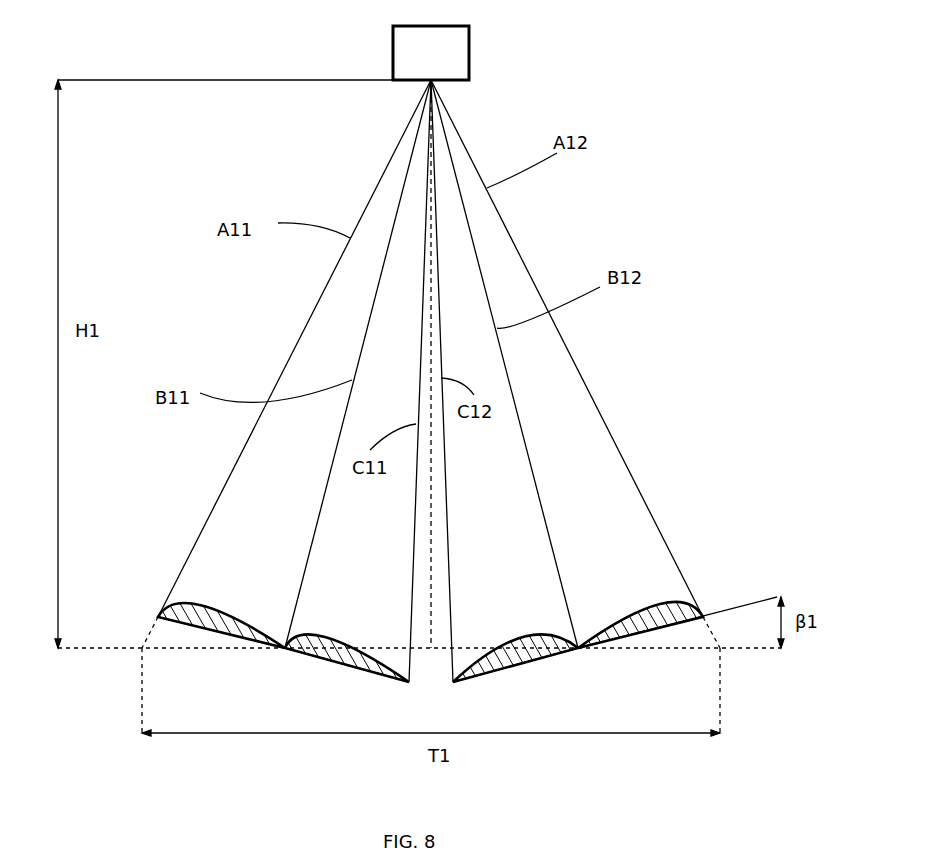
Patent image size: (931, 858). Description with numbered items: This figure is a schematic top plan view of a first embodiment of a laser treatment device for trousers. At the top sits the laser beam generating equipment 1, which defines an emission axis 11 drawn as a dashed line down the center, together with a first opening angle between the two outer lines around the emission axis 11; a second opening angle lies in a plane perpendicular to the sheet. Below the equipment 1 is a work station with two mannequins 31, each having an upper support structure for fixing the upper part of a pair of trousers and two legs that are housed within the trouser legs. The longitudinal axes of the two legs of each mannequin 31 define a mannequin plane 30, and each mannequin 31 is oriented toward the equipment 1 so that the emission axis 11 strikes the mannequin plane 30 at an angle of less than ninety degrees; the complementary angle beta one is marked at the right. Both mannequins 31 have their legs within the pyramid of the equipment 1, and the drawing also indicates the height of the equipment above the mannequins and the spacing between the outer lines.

The laser beam generating equipment 1 is at (442, 60).
The emission axis 11 is at (434, 536).
The mannequin plane 30 is at (738, 604).
The mannequin 31 is at (185, 607).